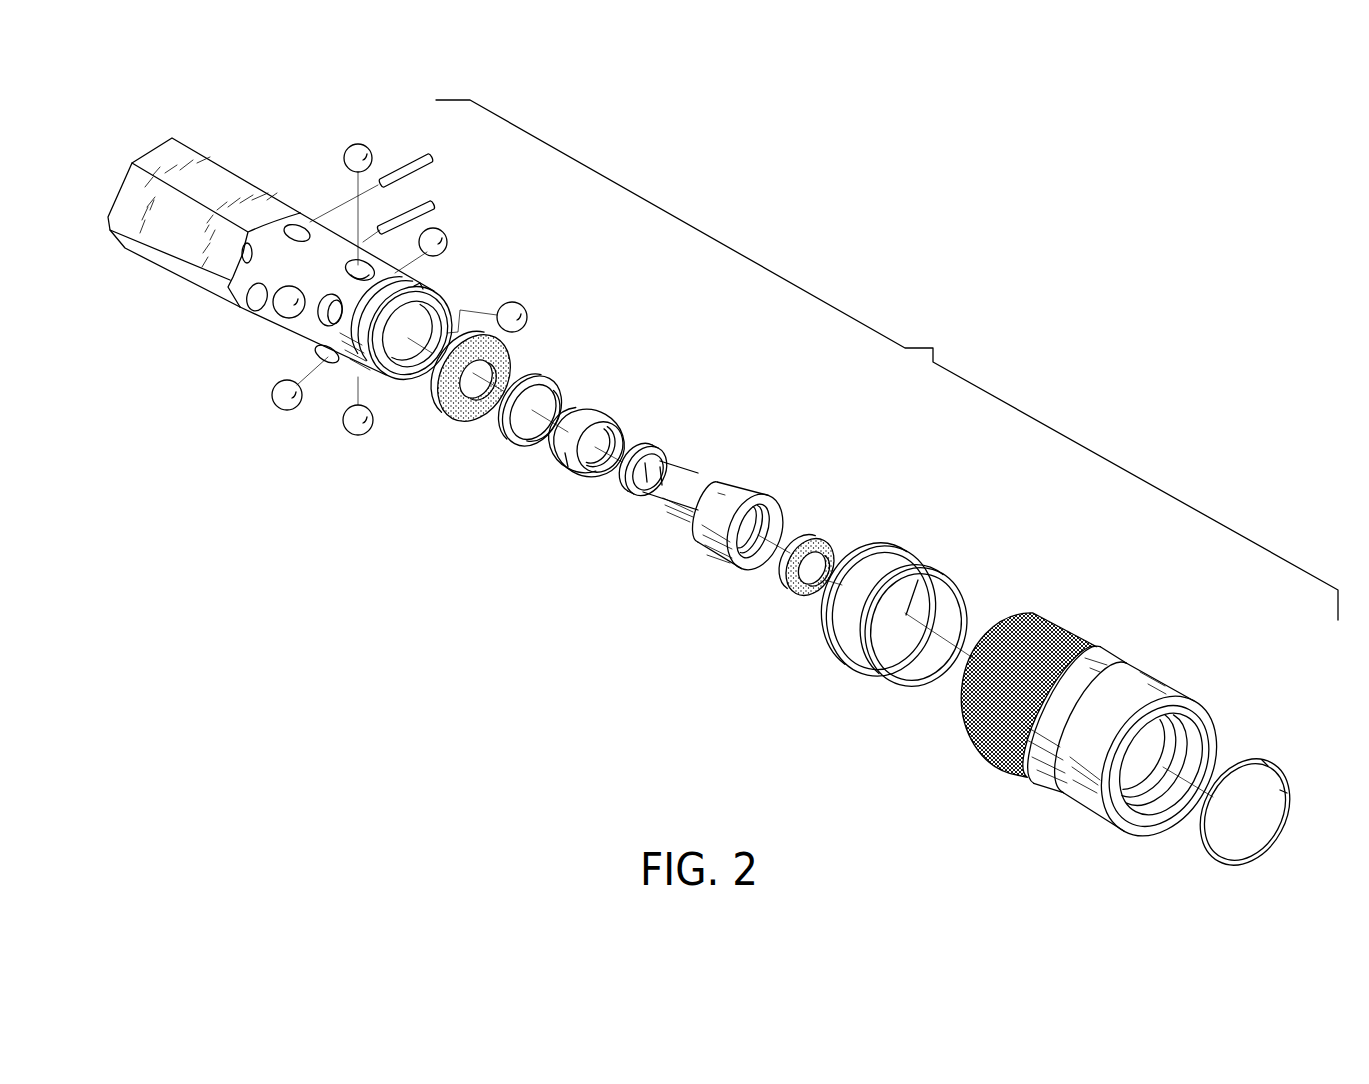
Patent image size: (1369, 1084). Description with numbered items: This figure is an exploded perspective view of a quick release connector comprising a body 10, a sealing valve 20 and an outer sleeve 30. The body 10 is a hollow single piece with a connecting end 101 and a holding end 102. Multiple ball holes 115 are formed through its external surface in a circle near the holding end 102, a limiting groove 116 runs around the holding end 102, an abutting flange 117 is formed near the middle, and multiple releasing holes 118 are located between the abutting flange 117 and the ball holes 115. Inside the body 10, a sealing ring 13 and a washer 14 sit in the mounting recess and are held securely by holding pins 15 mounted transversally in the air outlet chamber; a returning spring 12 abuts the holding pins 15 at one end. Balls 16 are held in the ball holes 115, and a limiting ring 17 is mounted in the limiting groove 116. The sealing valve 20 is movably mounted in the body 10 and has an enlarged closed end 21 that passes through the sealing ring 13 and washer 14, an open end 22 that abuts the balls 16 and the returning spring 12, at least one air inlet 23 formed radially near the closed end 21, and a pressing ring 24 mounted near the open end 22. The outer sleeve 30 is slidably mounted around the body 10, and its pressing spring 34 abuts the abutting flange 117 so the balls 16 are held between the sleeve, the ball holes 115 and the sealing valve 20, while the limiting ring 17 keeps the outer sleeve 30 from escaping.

The body 10 is at (176, 331).
The connecting end 101 is at (150, 142).
The holding end 102 is at (400, 384).
The ball holes 115 is at (318, 318).
The limiting groove 116 is at (418, 288).
The abutting flange 117 is at (292, 214).
The releasing holes 118 is at (250, 297).
The holding pins 15 is at (398, 175).
The balls 16 is at (356, 436).
The sealing ring 13 is at (500, 357).
The washer 14 is at (553, 383).
The returning spring 12 is at (571, 468).
The sealing valve 20 is at (663, 551).
The closed end 21 is at (622, 483).
The open end 22 is at (722, 553).
The air inlet 23 is at (673, 465).
The pressing ring 24 is at (820, 543).
The pressing spring 34 is at (957, 580).
The outer sleeve 30 is at (1145, 633).
The limiting ring 17 is at (1265, 763).